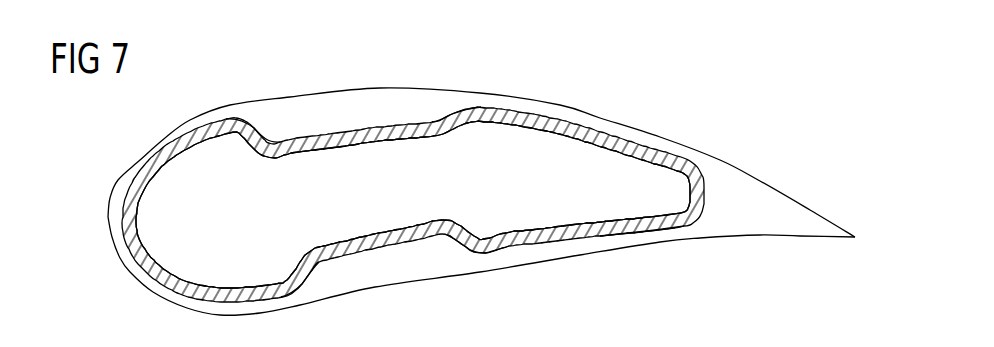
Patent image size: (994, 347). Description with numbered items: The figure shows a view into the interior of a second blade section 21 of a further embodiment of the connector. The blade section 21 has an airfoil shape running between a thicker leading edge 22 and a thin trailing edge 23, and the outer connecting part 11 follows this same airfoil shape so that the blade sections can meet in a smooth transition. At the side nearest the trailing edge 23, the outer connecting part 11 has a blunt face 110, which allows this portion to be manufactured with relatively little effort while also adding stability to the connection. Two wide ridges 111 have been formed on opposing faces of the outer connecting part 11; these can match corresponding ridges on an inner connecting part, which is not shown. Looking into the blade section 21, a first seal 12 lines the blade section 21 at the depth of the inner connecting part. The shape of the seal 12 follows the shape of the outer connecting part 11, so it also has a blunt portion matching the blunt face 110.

The outer connecting part 11 is at (155, 277).
The first seal 12 is at (648, 224).
The second blade section 21 is at (668, 135).
The leading edge 22 is at (108, 211).
The trailing edge 23 is at (857, 240).
The blunt face 110 is at (687, 197).
The wide ridges 111 is at (450, 112).